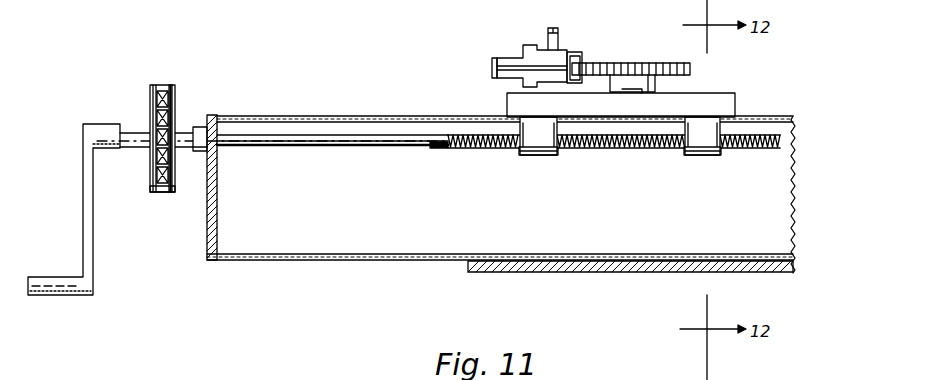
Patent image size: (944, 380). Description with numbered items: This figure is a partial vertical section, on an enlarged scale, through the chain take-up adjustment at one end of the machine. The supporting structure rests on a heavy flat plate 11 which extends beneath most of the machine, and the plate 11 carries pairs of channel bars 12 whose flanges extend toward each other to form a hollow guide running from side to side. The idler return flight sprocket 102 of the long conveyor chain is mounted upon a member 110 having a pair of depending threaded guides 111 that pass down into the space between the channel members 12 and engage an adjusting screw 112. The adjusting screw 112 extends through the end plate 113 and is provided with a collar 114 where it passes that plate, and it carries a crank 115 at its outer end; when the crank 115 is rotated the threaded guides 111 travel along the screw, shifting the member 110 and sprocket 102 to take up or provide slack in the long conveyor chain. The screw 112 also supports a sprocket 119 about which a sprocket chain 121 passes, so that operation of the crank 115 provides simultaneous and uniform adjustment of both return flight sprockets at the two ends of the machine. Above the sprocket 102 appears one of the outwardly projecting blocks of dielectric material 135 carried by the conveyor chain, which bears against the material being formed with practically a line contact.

The heavy flat plate 11 is at (525, 262).
The channel bars 12 is at (384, 260).
The idler return flight sprocket 102 is at (690, 68).
The member 110 is at (728, 100).
The depending threaded guides 111 is at (538, 155).
The adjusting screw 112 is at (349, 147).
The end plate 113 is at (216, 215).
The collar 114 is at (201, 127).
The crank 115 is at (50, 278).
The sprocket 119 is at (163, 192).
The sprocket chain 121 is at (172, 85).
The block of dielectric material 135 is at (506, 58).